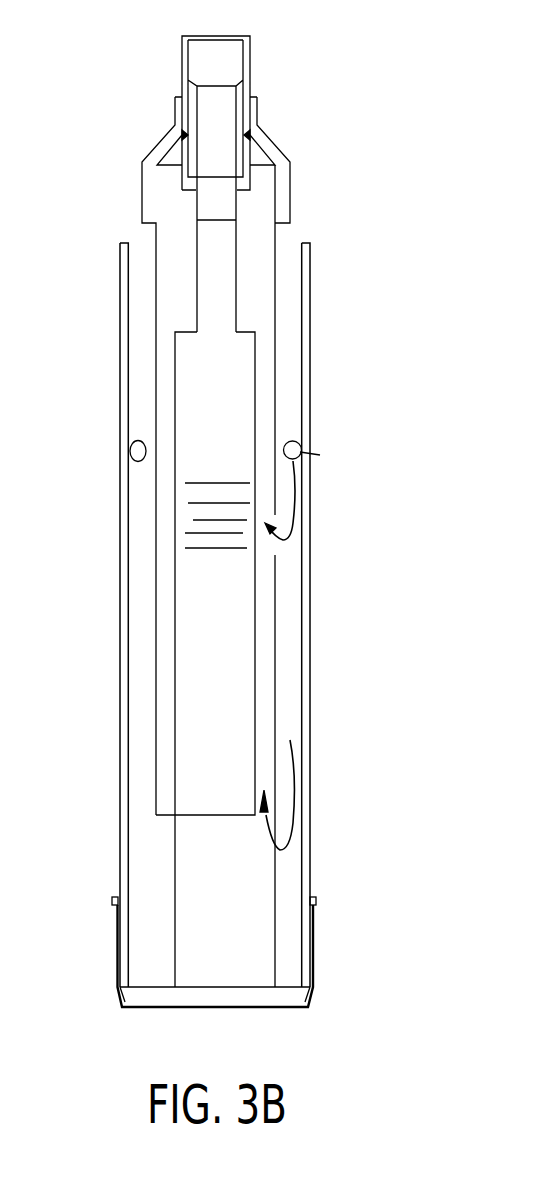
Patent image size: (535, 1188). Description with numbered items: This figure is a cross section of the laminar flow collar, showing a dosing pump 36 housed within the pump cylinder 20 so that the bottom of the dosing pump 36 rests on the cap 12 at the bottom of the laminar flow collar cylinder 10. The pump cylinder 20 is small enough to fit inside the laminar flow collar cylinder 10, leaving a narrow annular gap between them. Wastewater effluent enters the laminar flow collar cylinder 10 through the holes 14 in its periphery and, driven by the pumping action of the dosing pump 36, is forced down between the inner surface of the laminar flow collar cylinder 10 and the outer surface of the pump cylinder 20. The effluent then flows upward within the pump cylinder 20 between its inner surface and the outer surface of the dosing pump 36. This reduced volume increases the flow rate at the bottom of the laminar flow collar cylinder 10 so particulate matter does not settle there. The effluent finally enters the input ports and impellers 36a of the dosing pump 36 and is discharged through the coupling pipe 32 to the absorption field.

The laminar flow collar cylinder 10 is at (310, 850).
The cap 12 is at (313, 986).
The holes 14 is at (300, 447).
The pump cylinder 20 is at (275, 245).
The coupling pipe 32 is at (250, 53).
The dosing pump 36 is at (176, 433).
The input ports and impellers 36a is at (207, 505).